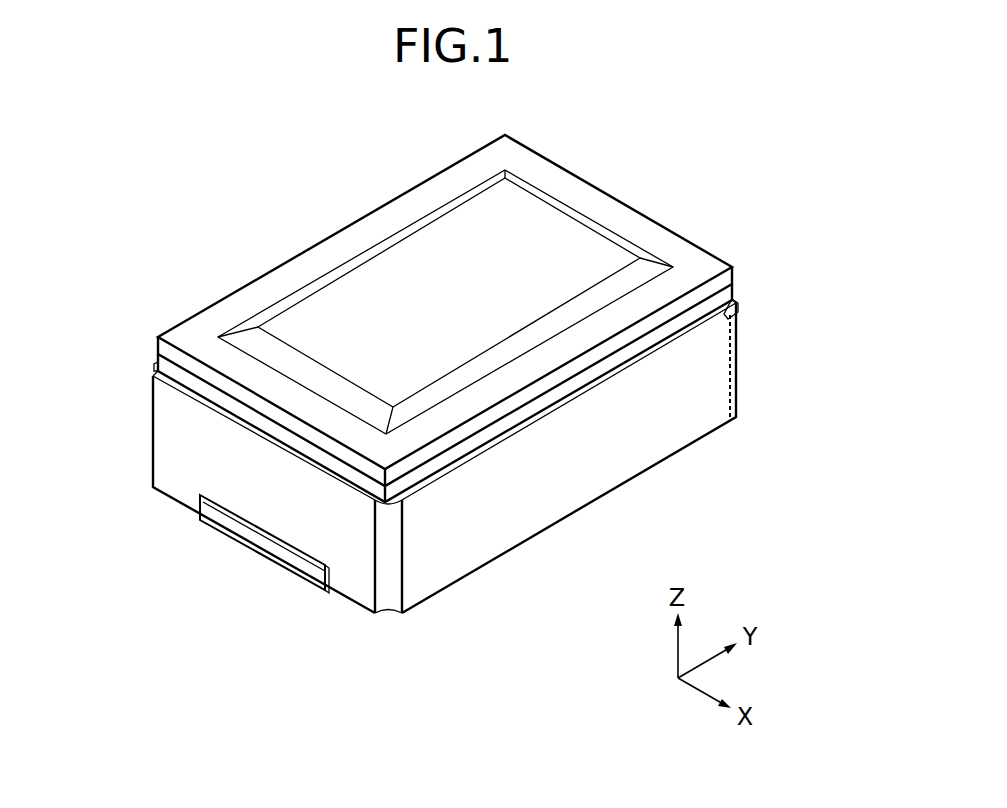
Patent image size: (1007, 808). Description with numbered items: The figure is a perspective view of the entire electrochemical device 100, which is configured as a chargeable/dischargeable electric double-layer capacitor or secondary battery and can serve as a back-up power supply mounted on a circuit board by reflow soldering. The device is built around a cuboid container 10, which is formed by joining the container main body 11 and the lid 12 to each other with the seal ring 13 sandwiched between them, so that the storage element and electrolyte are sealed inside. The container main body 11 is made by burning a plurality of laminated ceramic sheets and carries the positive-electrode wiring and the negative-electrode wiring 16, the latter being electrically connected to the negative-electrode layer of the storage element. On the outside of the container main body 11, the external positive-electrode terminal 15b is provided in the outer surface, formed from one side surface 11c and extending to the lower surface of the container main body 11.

The electrochemical device 100 is at (704, 100).
The container 10 is at (92, 315).
The lid 12 is at (163, 345).
The seal ring 13 is at (160, 368).
The container main body 11 is at (165, 435).
The side surface 11c is at (173, 470).
The external positive-electrode terminal 15b is at (242, 547).
The negative-electrode wiring 16 is at (737, 310).